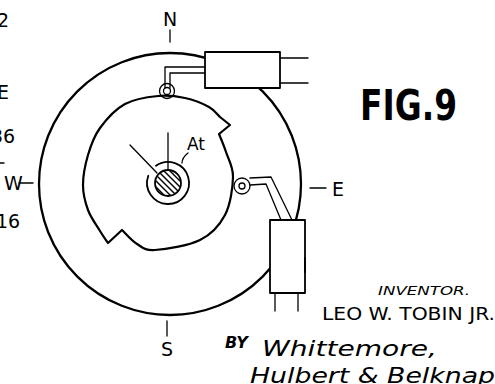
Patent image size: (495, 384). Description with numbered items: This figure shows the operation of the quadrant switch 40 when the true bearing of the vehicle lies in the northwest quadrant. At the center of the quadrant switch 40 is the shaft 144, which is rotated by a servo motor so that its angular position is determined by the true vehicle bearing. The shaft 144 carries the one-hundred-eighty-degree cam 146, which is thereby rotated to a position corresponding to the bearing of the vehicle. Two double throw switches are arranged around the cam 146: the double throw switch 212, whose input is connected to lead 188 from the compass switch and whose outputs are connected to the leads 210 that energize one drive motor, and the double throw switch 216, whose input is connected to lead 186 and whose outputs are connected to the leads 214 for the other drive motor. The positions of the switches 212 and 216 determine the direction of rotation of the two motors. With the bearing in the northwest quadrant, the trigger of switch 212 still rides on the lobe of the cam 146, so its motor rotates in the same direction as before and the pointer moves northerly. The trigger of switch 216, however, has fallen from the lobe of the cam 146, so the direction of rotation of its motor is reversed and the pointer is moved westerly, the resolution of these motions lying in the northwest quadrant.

The quadrant switch 40 is at (121, 57).
The shaft 144 is at (179, 199).
The 180° cam 146 is at (177, 240).
The lead 186 is at (305, 265).
The lead 188 is at (240, 52).
The leads 210 is at (294, 60).
The double throw switch 212 is at (280, 52).
The leads 214 is at (276, 300).
The double throw switch 216 is at (303, 246).